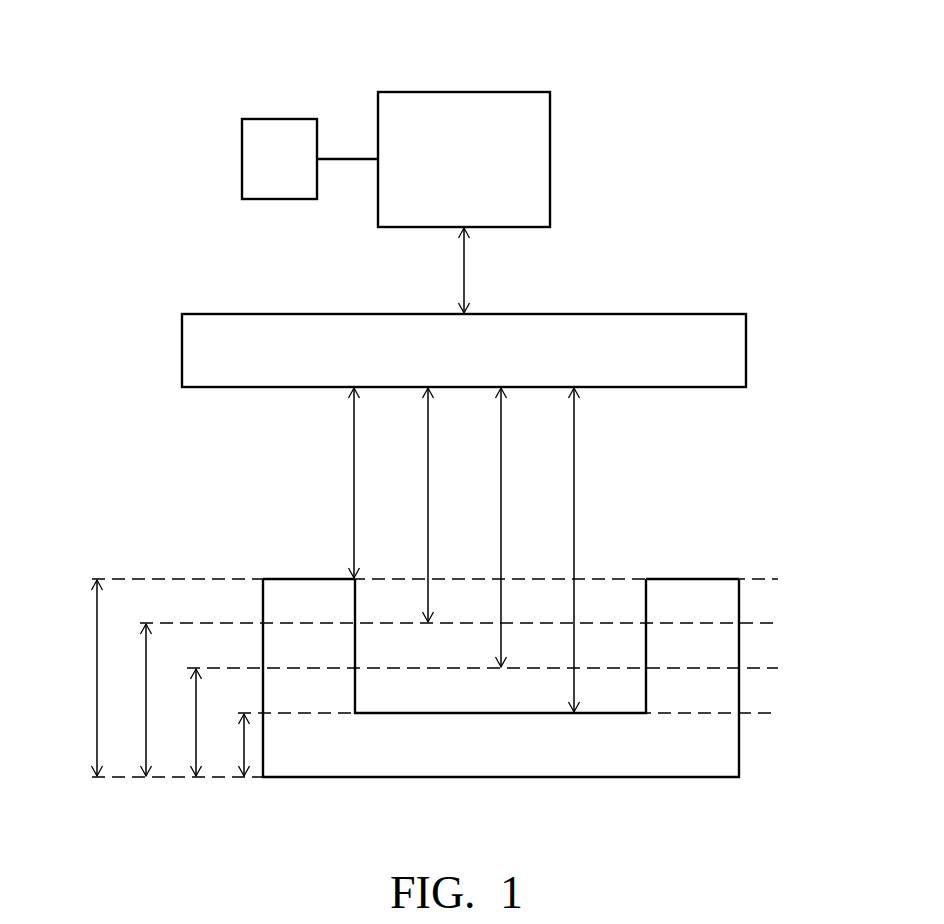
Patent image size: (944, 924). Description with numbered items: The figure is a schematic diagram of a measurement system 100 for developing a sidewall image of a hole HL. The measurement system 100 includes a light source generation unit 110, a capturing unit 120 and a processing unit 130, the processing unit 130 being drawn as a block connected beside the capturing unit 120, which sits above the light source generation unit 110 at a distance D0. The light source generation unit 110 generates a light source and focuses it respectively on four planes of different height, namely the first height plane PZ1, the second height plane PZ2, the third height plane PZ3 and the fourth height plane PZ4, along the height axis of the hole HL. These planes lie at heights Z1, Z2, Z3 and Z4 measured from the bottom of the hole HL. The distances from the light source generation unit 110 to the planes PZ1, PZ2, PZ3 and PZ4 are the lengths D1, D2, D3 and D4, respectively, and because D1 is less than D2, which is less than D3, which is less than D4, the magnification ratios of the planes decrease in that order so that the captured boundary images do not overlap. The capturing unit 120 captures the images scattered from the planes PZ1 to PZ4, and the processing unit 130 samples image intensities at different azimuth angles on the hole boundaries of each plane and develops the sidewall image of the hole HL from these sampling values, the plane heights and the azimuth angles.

The measurement system 100 is at (706, 86).
The light source generation unit 110 is at (486, 367).
The capturing unit 120 is at (485, 174).
The processing unit 130 is at (256, 174).
The distance from the light source generation unit to the capturing unit D0 is at (465, 270).
The distance from the light source generation unit to plane PZ1 D1 is at (355, 446).
The distance from the light source generation unit to plane PZ2 D2 is at (429, 446).
The distance from the light source generation unit to plane PZ3 D3 is at (502, 446).
The distance from the light source generation unit to plane PZ4 D4 is at (575, 446).
The hole HL is at (613, 565).
The first height plane PZ1 is at (752, 581).
The second height plane PZ2 is at (752, 625).
The third height plane PZ3 is at (752, 670).
The fourth height plane PZ4 is at (752, 715).
The height of plane PZ1 Z1 is at (76, 678).
The height of plane PZ2 Z2 is at (128, 700).
The height of plane PZ3 Z3 is at (177, 722).
The height of plane PZ4 Z4 is at (225, 745).